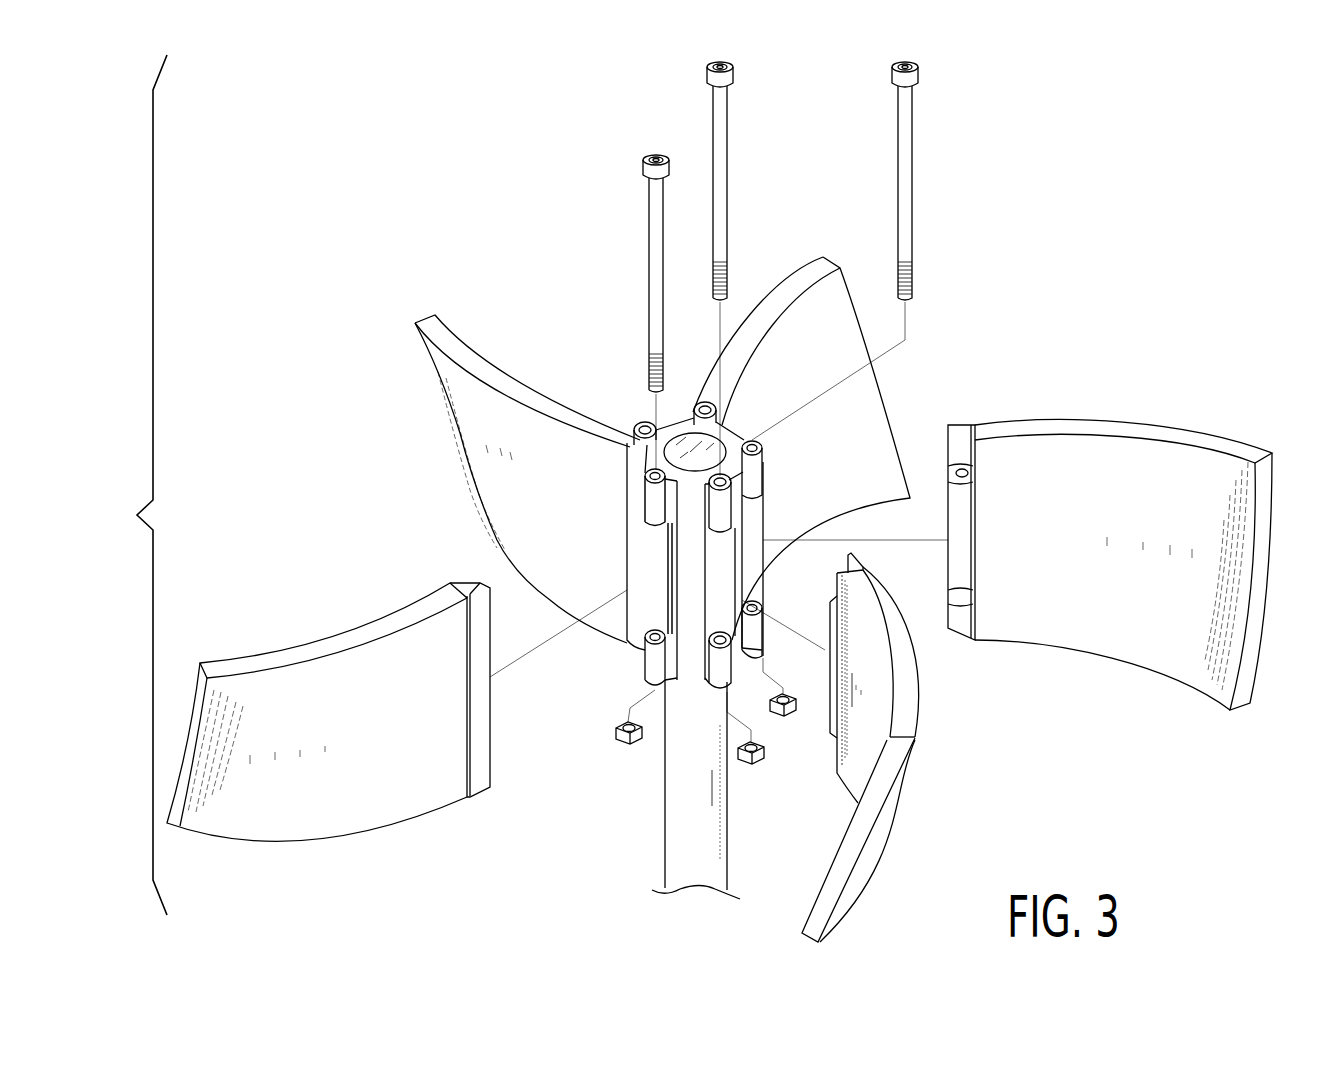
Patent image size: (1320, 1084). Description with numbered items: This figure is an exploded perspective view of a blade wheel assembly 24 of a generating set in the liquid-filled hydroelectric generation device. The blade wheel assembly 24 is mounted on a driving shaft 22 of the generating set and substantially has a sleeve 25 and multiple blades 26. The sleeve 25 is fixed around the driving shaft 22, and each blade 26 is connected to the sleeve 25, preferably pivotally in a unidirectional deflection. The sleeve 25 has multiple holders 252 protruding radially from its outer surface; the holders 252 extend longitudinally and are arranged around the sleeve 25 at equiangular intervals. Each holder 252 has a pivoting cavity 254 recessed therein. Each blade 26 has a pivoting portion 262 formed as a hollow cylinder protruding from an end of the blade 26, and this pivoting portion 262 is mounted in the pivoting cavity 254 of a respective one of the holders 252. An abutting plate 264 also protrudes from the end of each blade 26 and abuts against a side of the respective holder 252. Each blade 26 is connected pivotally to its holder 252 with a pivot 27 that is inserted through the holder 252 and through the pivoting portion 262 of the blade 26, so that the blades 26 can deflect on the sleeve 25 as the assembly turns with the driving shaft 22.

The driving shaft 22 is at (685, 828).
The blade wheel assembly 24 is at (432, 257).
The sleeve 25 is at (768, 470).
The holder 252 is at (655, 497).
The pivoting cavity 254 is at (665, 557).
The blade 26 is at (719, 597).
The pivoting portion 262 is at (965, 562).
The abutting plate 264 is at (962, 435).
The pivot 27 is at (905, 182).